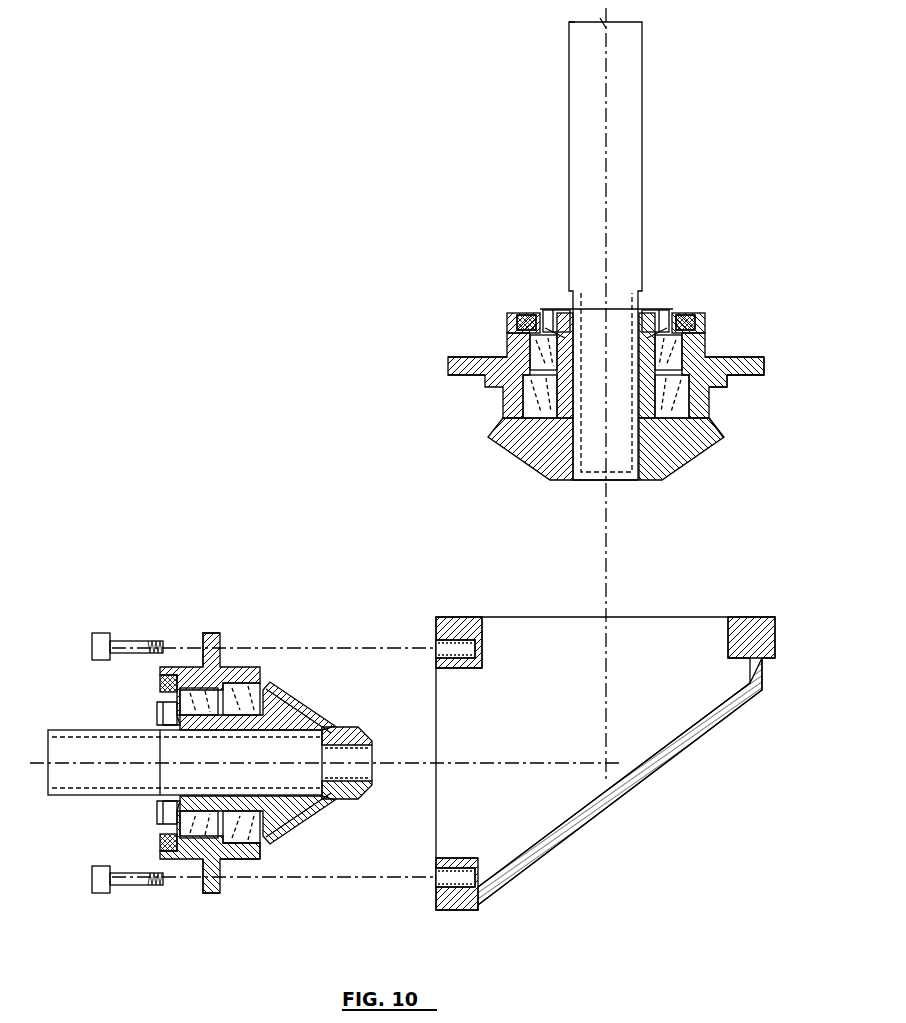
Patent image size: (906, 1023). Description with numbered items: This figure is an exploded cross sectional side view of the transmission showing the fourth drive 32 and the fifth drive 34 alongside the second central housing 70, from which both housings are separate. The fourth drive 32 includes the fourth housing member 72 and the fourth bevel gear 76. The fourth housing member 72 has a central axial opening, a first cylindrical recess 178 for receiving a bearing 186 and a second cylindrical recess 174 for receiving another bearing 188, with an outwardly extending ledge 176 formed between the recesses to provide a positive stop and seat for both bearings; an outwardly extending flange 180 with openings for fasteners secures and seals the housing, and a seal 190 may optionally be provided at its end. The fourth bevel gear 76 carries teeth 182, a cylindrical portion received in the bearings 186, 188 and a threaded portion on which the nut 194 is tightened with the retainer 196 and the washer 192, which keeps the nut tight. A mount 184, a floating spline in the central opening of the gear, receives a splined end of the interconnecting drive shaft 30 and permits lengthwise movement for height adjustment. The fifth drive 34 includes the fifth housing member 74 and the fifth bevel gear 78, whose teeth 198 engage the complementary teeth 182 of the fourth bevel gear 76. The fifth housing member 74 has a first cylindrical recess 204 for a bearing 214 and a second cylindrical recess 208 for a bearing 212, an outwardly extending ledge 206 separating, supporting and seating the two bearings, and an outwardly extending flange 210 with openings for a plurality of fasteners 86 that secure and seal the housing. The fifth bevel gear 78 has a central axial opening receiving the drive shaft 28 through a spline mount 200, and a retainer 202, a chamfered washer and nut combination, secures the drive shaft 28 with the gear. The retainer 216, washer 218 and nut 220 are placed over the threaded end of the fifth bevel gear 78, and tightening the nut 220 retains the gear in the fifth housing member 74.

The drive shaft 28 is at (62, 730).
The interconnecting drive shaft 30 is at (642, 120).
The fourth drive 32 is at (456, 295).
The fifth drive 34 is at (199, 586).
The second central housing 70 is at (607, 812).
The fourth housing member 72 is at (703, 313).
The fifth housing member 74 is at (195, 667).
The fourth bevel gear 76 is at (716, 426).
The fifth bevel gear 78 is at (275, 680).
The fasteners 86 is at (95, 633).
The cylindrical recess 174 is at (707, 330).
The ledge 176 is at (707, 357).
The cylindrical recess 178 is at (705, 397).
The flange 180 is at (760, 373).
The teeth 182 is at (676, 478).
The mount 184 is at (577, 462).
The bearing 186 is at (540, 397).
The bearing 188 is at (543, 352).
The seal 190 is at (525, 313).
The washer 192 is at (670, 310).
The nut 194 is at (657, 308).
The retainer 196 is at (688, 310).
The teeth 198 is at (315, 700).
The mount 200 is at (282, 825).
The retainer 202 is at (355, 727).
The cylindrical recess 204 is at (245, 857).
The ledge 206 is at (225, 855).
The cylindrical recess 208 is at (193, 852).
The flange 210 is at (212, 892).
The bearing 212 is at (177, 667).
The bearing 214 is at (250, 667).
The retainer 216 is at (160, 837).
The washer 218 is at (173, 832).
The nut 220 is at (157, 812).